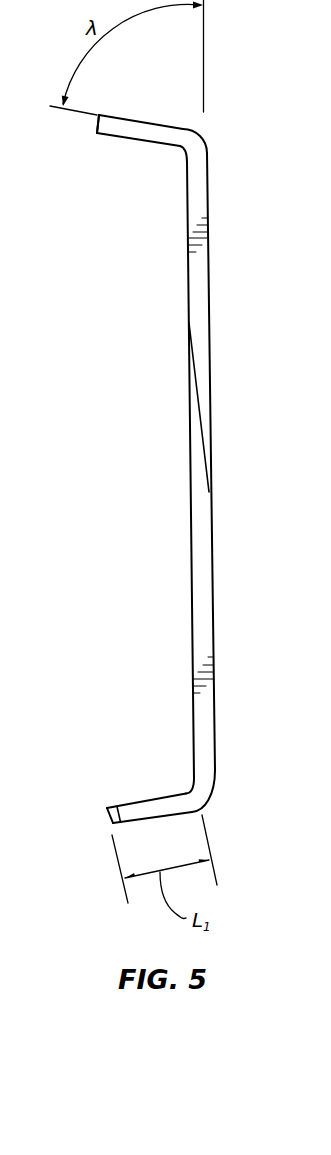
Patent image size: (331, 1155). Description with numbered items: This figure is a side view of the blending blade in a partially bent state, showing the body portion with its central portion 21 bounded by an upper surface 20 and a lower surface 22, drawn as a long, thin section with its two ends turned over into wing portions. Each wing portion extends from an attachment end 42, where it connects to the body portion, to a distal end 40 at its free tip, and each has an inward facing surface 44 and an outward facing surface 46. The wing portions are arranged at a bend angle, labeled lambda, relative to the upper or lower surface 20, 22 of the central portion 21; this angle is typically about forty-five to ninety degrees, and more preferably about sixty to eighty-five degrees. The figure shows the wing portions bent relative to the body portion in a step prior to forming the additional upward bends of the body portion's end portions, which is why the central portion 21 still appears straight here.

The upper surface 20 is at (191, 501).
The central portion 21 is at (188, 407).
The lower surface 22 is at (212, 507).
The distal end 40 is at (97, 125).
The attachment end 42 is at (187, 128).
The inward facing surface 44 is at (127, 140).
The outward facing surface 46 is at (148, 117).